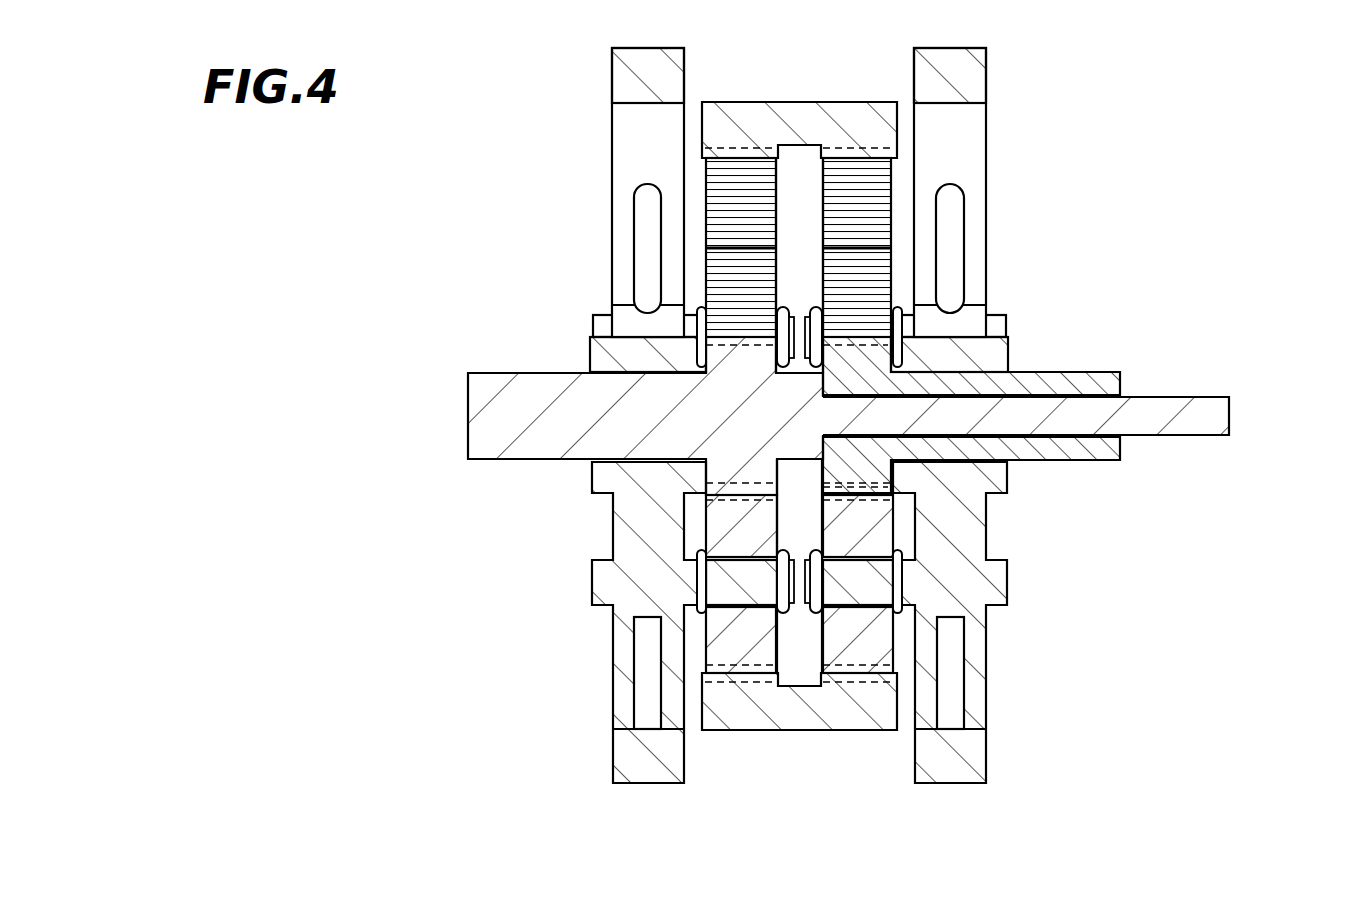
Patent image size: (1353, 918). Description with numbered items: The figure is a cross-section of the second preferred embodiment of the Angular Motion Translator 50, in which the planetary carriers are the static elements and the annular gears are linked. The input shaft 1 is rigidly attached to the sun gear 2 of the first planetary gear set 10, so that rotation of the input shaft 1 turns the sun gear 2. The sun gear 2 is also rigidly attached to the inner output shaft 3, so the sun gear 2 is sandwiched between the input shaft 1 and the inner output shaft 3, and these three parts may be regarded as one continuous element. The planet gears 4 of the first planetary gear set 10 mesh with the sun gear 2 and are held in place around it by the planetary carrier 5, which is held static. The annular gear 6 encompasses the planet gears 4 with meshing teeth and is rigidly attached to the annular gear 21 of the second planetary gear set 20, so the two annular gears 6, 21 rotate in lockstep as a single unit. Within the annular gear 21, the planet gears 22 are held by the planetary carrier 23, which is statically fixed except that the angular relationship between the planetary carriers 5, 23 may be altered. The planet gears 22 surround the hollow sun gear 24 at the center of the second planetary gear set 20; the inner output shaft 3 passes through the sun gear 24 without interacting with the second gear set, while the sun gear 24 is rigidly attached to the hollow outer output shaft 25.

The input shaft 1 is at (485, 380).
The sun gear 2 is at (728, 427).
The inner output shaft 3 is at (1217, 412).
The planet gears 4 is at (717, 255).
The planetary carrier 5 is at (620, 72).
The annular gear 6 is at (750, 152).
The first planetary gear set 10 is at (662, 829).
The second planetary gear set 20 is at (965, 829).
The annular gear 21 is at (865, 152).
The planet gears 22 is at (885, 255).
The planetary carrier 23 is at (975, 78).
The sun gear 24 is at (878, 362).
The outer output shaft 25 is at (1098, 378).
The Angular Motion Translator 50 is at (312, 757).